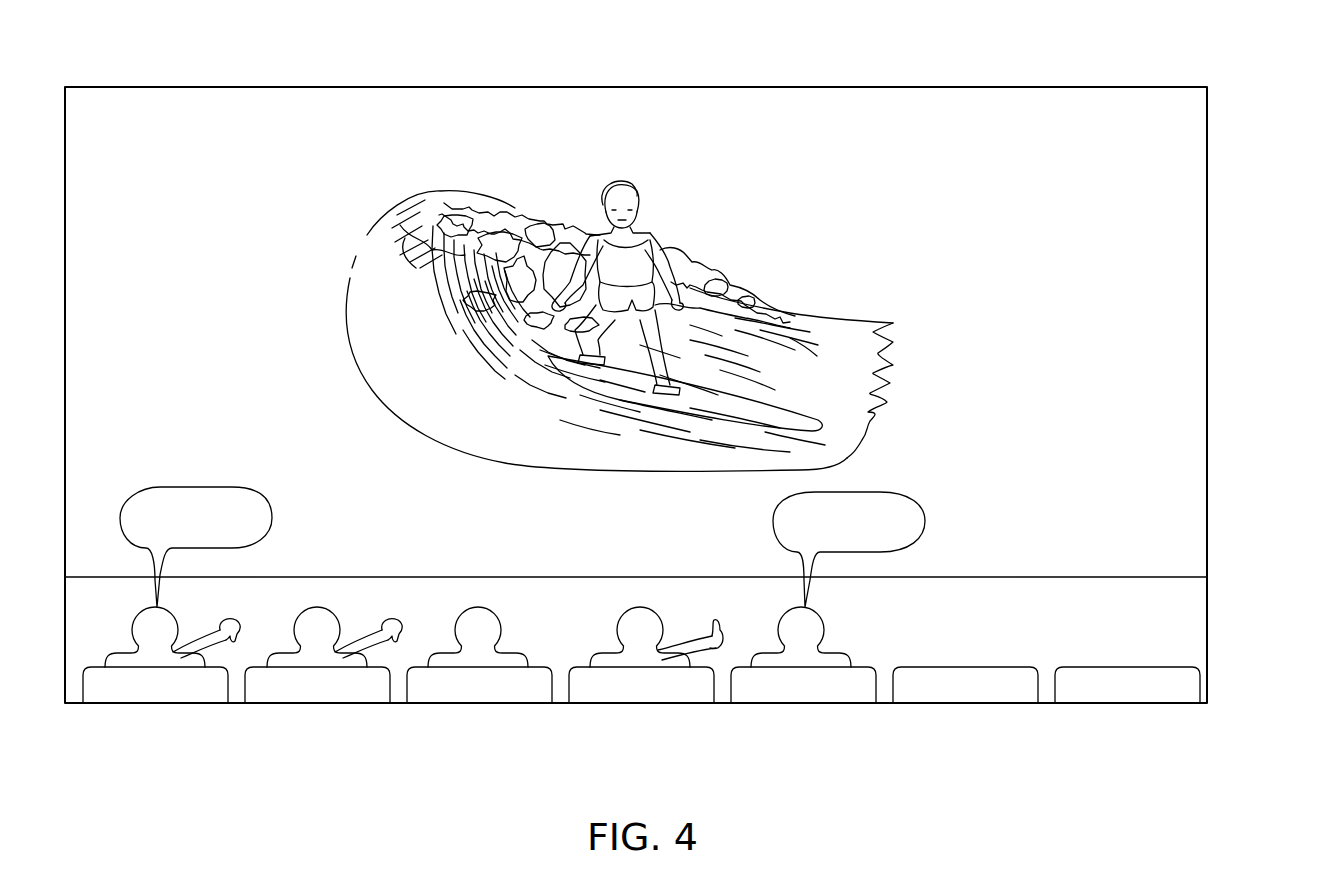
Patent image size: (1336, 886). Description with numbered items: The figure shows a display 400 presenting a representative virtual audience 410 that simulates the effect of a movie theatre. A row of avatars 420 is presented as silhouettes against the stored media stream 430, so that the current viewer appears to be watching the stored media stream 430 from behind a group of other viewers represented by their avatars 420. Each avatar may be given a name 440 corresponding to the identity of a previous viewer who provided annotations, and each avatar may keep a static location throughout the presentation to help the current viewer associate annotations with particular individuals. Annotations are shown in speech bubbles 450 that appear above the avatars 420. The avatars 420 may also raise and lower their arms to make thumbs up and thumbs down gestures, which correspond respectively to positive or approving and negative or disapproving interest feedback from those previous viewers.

The display 400 is at (934, 42).
The virtual audience 410 is at (1237, 578).
The avatars 420 is at (763, 704).
The stored media stream 430 is at (1106, 168).
The avatar names 440 is at (180, 688).
The speech bubbles 450 is at (190, 497).